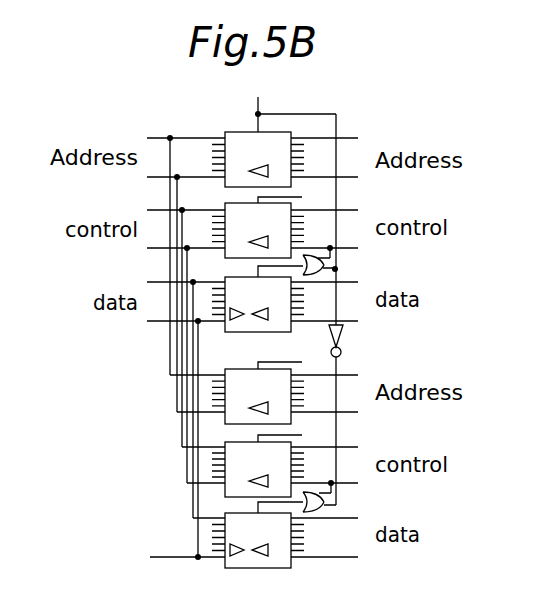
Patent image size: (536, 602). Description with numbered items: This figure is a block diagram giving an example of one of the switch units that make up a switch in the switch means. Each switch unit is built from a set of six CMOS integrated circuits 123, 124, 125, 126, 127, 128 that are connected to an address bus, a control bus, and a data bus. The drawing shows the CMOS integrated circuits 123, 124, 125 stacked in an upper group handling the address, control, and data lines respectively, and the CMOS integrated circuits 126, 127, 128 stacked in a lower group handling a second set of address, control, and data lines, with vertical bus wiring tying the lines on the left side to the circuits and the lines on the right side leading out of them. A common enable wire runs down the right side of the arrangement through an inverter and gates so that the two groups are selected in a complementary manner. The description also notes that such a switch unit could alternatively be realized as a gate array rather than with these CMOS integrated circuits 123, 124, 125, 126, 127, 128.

The CMOS integrated circuit 123 is at (242, 131).
The CMOS integrated circuit 124 is at (233, 199).
The CMOS integrated circuit 125 is at (233, 273).
The CMOS integrated circuit 126 is at (228, 367).
The CMOS integrated circuit 127 is at (230, 441).
The CMOS integrated circuit 128 is at (233, 512).